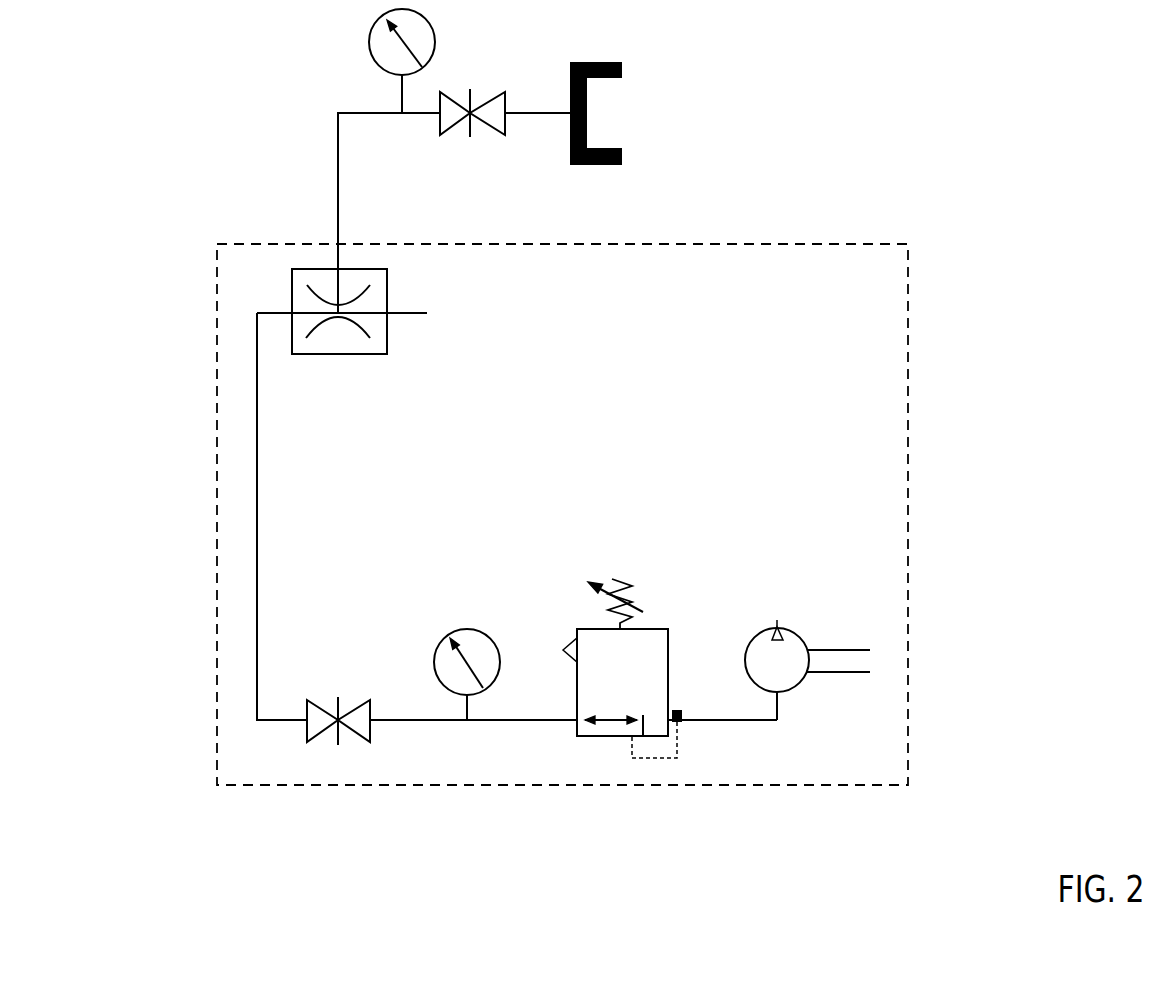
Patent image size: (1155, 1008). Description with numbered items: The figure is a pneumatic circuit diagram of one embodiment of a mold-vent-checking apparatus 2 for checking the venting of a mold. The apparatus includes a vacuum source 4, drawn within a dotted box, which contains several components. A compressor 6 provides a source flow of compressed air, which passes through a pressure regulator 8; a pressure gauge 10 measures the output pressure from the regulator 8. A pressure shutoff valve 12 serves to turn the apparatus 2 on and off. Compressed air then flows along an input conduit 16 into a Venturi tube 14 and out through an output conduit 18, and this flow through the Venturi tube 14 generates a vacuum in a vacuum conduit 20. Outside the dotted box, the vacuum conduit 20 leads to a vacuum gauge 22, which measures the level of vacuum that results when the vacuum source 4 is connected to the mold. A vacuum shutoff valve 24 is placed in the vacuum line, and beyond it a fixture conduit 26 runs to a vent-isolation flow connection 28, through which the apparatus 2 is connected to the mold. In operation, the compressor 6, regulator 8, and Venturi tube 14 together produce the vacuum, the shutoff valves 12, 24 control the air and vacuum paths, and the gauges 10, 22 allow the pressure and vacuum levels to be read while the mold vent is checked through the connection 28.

The mold-vent-checking apparatus 2 is at (847, 147).
The vacuum source 4 is at (228, 432).
The compressor 6 is at (790, 648).
The pressure regulator 8 is at (648, 647).
The pressure gauge 10 is at (480, 643).
The pressure shutoff valve 12 is at (315, 717).
The Venturi tube 14 is at (352, 342).
The input conduit 16 is at (258, 502).
The output conduit 18 is at (408, 310).
The vacuum conduit 20 is at (338, 183).
The vacuum gauge 22 is at (385, 56).
The vacuum shutoff valve 24 is at (450, 115).
The fixture conduit 26 is at (518, 115).
The vent-isolation flow connection 28 is at (590, 135).